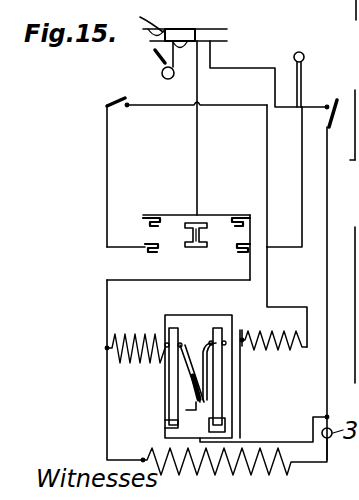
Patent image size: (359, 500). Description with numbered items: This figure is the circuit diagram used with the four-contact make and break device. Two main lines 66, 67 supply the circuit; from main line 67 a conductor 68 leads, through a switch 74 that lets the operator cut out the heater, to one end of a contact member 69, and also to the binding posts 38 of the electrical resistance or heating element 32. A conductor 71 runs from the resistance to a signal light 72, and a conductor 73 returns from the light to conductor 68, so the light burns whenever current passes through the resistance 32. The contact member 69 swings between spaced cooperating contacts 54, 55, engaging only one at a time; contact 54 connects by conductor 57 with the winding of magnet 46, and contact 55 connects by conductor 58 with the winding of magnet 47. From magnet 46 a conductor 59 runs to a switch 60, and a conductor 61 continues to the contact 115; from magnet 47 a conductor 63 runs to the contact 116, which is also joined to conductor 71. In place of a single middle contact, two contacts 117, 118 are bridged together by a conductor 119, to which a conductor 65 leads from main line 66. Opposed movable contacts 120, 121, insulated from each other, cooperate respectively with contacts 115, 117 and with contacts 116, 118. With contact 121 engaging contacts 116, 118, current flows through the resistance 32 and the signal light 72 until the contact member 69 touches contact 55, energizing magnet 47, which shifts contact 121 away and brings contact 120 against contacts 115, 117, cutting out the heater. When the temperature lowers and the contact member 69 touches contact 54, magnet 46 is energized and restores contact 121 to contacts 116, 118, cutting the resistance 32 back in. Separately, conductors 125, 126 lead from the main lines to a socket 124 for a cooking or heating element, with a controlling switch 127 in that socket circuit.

The conductor 125 is at (134, 18).
The conductor 126 is at (183, 29).
The main line 66 is at (217, 27).
The main line 67 is at (227, 41).
The controlling switch 127 is at (154, 53).
The socket 124 is at (162, 73).
The signal light 72 is at (304, 55).
The conductor 73 is at (296, 80).
The switch 74 is at (328, 268).
The conductor 68 is at (275, 87).
The switch 60 is at (113, 100).
The conductor 61 is at (107, 165).
The conductor 65 is at (197, 149).
The conductor 59 is at (267, 123).
The conductor 119 is at (182, 215).
The contact 117 is at (152, 217).
The contact 118 is at (232, 217).
The conductor 71 is at (302, 198).
The contact 115 is at (145, 250).
The contact 120 is at (185, 236).
The contact 121 is at (207, 237).
The contact 116 is at (248, 250).
The conductor 63 is at (186, 281).
The conductor 58 is at (225, 315).
The magnet 47 is at (137, 327).
The magnet 46 is at (275, 326).
The contact member 69 is at (192, 382).
The contact 54 is at (182, 400).
The contact 55 is at (207, 383).
The conductor 57 is at (238, 424).
The binding post 38 is at (107, 437).
The electrical resistance 32 is at (253, 466).